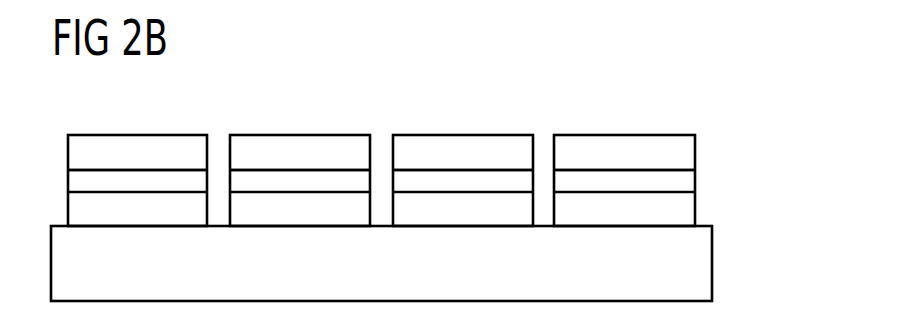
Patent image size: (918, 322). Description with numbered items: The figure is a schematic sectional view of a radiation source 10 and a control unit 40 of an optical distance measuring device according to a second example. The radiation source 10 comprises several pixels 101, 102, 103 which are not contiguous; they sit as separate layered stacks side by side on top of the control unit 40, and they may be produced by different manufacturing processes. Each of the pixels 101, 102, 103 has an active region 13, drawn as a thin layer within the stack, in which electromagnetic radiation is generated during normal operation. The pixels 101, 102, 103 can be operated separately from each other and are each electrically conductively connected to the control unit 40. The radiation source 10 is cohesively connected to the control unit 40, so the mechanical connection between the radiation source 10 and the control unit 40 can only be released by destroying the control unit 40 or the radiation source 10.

The radiation source 10 is at (722, 137).
The active region 13 is at (137, 168).
The pixel 101 is at (623, 183).
The pixel 102 is at (463, 182).
The pixel 103 is at (299, 183).
The control unit 40 is at (706, 264).